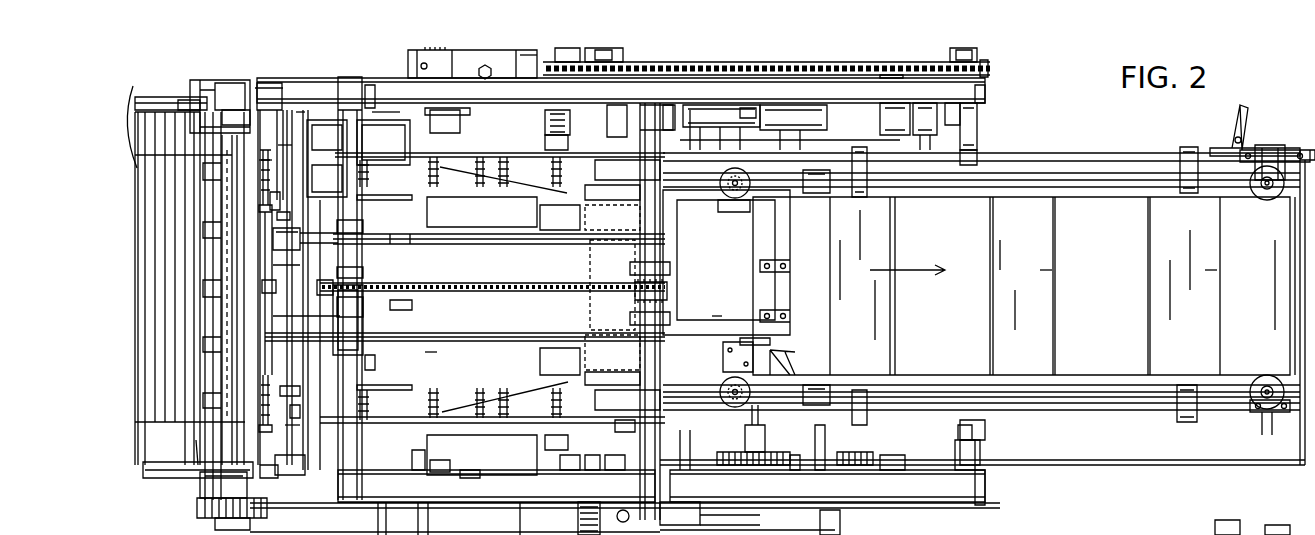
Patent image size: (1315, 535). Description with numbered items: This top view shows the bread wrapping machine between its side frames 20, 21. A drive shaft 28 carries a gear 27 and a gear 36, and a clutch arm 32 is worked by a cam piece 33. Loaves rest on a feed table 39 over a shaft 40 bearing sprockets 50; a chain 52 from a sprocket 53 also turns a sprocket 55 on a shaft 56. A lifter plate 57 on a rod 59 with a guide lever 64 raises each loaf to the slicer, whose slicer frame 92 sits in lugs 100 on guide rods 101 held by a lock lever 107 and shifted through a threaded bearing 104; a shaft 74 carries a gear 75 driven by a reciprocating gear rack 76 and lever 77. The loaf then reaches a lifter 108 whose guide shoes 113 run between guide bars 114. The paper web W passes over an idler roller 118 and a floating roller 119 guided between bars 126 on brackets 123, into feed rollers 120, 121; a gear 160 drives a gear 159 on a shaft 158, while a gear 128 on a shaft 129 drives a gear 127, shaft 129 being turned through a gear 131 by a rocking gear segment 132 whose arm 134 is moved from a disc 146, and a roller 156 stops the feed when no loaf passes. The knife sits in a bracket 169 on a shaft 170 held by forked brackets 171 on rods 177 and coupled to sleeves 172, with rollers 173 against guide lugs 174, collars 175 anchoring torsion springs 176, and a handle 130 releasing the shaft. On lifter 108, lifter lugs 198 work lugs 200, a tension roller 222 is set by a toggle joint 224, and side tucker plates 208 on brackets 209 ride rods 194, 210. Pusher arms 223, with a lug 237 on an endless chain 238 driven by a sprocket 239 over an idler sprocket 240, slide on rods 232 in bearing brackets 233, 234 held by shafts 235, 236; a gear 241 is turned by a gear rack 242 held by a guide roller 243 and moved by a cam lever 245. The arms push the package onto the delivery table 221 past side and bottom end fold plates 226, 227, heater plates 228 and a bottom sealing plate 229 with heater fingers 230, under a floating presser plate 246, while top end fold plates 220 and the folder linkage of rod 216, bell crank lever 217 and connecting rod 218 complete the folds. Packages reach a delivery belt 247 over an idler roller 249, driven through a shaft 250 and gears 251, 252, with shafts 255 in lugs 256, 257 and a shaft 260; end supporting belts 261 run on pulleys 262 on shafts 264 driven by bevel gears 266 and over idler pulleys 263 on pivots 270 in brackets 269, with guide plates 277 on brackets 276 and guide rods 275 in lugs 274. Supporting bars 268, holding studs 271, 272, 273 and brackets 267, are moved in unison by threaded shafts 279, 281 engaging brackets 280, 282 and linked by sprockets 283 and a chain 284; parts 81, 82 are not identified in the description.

The paper web W is at (134, 116).
The idler roller 118 is at (152, 110).
The bars 126 is at (162, 97).
The floating roller 119 is at (185, 100).
The gear 160 is at (195, 85).
The gear 159 is at (232, 84).
The shaft 158 is at (220, 90).
The feed roller 120 is at (210, 450).
The feed roller 121 is at (198, 440).
The rollers 173 is at (262, 80).
The guide lugs 174 is at (278, 82).
The forked brackets 171 is at (270, 110).
The rods 177 is at (295, 112).
The sleeves 172 is at (315, 120).
The rod 194 is at (290, 112).
The guide bars 114 is at (380, 478).
The knife bracket 169 is at (283, 150).
The torsion springs 176 is at (270, 165).
The collars 175 is at (275, 195).
The rod 210 is at (285, 215).
The handle 130 is at (295, 238).
The brackets 209 is at (300, 392).
The shaft 129 is at (298, 412).
The shaft 170 is at (296, 428).
The gear 131 is at (223, 485).
The rocking gear segment 132 is at (280, 470).
The gear 127 is at (210, 505).
The gear 128 is at (222, 522).
The lifter lugs 198 is at (410, 103).
The slicer frame 92 is at (462, 70).
The supporting lugs 100 is at (385, 110).
The guide rods 101 is at (430, 50).
The delivery table 221 is at (490, 110).
The guide shoes 113 is at (363, 110).
The lifter 108 is at (380, 100).
The brackets 123 is at (352, 112).
The sprockets 283 is at (565, 58).
The chain 284 is at (808, 62).
The sprocket 55 is at (748, 110).
The sprocket 82 is at (898, 62).
The side frame 21 is at (985, 90).
The gear rack 242 is at (630, 78).
The gear 241 is at (670, 80).
The sprocket 239 is at (668, 290).
The bearing bracket 233 is at (662, 272).
The lug 237 is at (470, 282).
The endless chain 238 is at (475, 283).
The rods 232 is at (470, 333).
The bearing bracket 234 is at (408, 322).
The idler sprocket 240 is at (395, 235).
The shaft 236 is at (362, 136).
The studs 271 is at (368, 160).
The top end fold plates 220 is at (370, 180).
The side tucker plates 208 is at (367, 195).
The lugs 200 is at (412, 455).
The pusher arms 223 is at (355, 360).
The tension roller 222 is at (480, 137).
The studs 272 is at (478, 175).
The shaft 279 is at (545, 130).
The brackets 280 is at (545, 140).
The side end fold plates 226 is at (465, 440).
The bottom end fold plates 227 is at (525, 435).
The toggle joint 224 is at (452, 470).
The bottom sealing plate 229 is at (540, 215).
The heater plates 228 is at (582, 352).
The heater fingers 230 is at (602, 312).
The lifter plate 57 is at (595, 170).
The studs 273 is at (590, 190).
The rod 59 is at (630, 428).
The rod 216 is at (568, 465).
The bell crank lever 217 is at (592, 468).
The connecting rod 218 is at (618, 465).
The arm 134 is at (338, 505).
The lock lever 107 is at (403, 518).
The threaded bearing 104 is at (534, 518).
The shaft 235 is at (612, 516).
The lugs 274 is at (712, 100).
The sprockets 50 is at (702, 119).
The transverse shaft 40 is at (728, 97).
The brackets 267 is at (765, 105).
The gear 36 is at (795, 128).
The sprocket 53 is at (815, 128).
The chain 52 is at (830, 125).
The cam lever 245 is at (870, 130).
The shaft 81 is at (895, 100).
The reciprocating gear rack 76 is at (918, 100).
The lever 77 is at (880, 120).
The guide roller 243 is at (955, 115).
The shaft 74 is at (960, 140).
The shaft 260 is at (800, 146).
The guide rods 275 is at (1240, 109).
The end supporting belts 261 is at (800, 200).
The supporting bars 268 is at (1075, 165).
The brackets 276 is at (858, 195).
The lugs 257 is at (810, 178).
The bevel gears 266 is at (720, 180).
The pulleys 262 is at (728, 198).
The shafts 264 is at (760, 222).
The floating presser plate 246 is at (790, 262).
The shaft 56 is at (740, 345).
The shaft 250 is at (757, 360).
The guide lever 64 is at (705, 470).
The gear 252 is at (730, 470).
The gear 251 is at (755, 470).
The roller 156 is at (778, 470).
The arm 32 is at (830, 468).
The cam piece 33 is at (848, 468).
The gear 27 is at (865, 470).
The drive shaft 28 is at (945, 460).
The endless delivery belt 247 is at (1300, 195).
The brackets 269 is at (1268, 148).
The pivots 270 is at (1258, 198).
The idler pulleys 263 is at (1262, 200).
The idler roller 249 is at (1245, 405).
The shafts 255 is at (1108, 196).
The lugs 256 is at (1005, 196).
The guide plates 277 is at (945, 200).
The feed table 39 is at (1080, 465).
The side frame 20 is at (985, 488).
The brackets 282 is at (985, 145).
The threaded shaft 281 is at (985, 108).
The gear 75 is at (980, 128).
The disc 146 is at (835, 530).